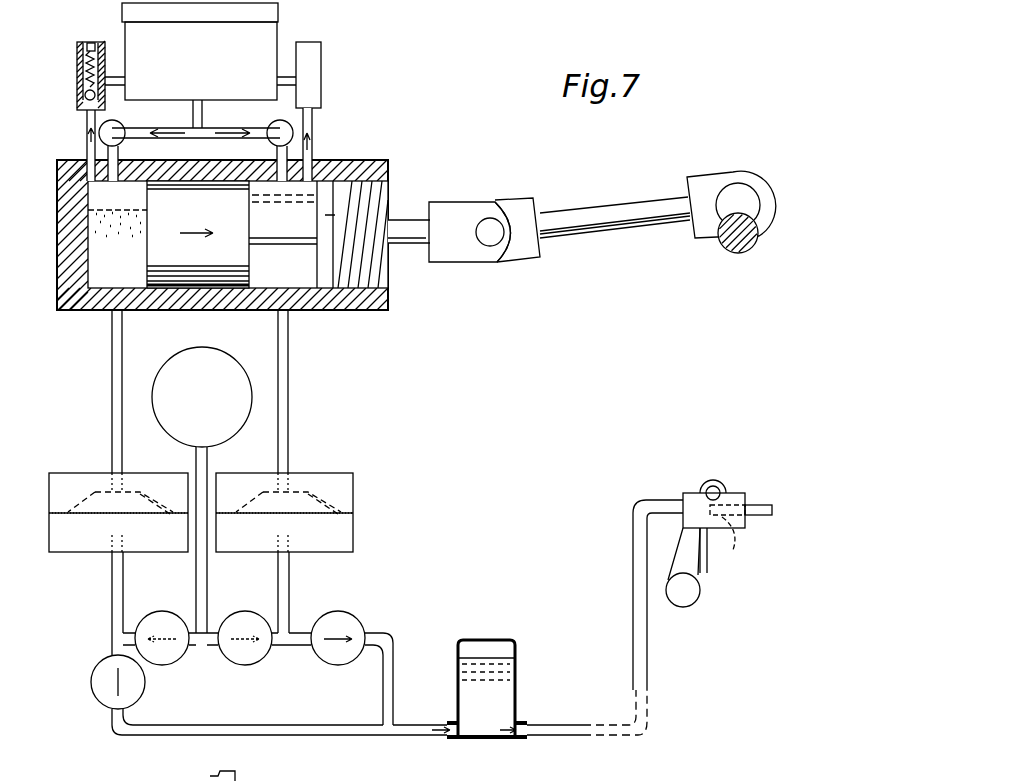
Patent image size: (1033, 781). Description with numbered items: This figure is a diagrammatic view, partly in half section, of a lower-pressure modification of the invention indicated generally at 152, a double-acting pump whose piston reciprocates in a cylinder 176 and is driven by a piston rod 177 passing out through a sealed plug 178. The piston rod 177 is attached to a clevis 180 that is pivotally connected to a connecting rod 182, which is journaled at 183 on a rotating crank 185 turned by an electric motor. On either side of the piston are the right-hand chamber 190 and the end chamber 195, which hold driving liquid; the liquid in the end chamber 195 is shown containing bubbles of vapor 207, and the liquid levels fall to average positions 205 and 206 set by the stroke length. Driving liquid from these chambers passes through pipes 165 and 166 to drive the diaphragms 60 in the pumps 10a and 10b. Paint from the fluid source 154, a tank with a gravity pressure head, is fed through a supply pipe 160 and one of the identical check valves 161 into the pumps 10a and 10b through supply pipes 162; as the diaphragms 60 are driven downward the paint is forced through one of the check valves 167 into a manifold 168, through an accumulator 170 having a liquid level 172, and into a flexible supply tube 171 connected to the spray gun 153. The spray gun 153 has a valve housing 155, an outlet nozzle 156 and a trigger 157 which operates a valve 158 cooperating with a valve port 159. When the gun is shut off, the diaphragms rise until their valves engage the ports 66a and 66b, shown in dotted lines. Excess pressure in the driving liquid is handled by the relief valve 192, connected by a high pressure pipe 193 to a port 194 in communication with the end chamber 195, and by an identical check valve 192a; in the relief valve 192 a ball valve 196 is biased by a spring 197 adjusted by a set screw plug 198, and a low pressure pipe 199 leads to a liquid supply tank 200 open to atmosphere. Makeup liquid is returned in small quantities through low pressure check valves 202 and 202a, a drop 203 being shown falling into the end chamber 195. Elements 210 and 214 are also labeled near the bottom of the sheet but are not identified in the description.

The diaphragm pump 10a is at (90, 565).
The diaphragm pump 10b is at (345, 558).
The diaphragm 60 is at (82, 470).
The port 66a is at (124, 480).
The port 66b is at (300, 478).
The pump 152 is at (380, 94).
The spray gun 153 is at (733, 458).
The fluid source tank 154 is at (200, 348).
The valve housing 155 is at (718, 490).
The outlet nozzle 156 is at (760, 515).
The trigger 157 is at (708, 572).
The valve 158 is at (751, 539).
The valve port 159 is at (745, 500).
The supply pipe 160 is at (207, 578).
The check valve 161 is at (228, 660).
The supply pipe 162 is at (118, 590).
The pipe 165 is at (112, 378).
The pipe 166 is at (288, 378).
The check valve 167 is at (338, 666).
The manifold 168 is at (365, 736).
The accumulator 170 is at (524, 668).
The flexible supply tube 171 is at (633, 531).
The liquid level 172 is at (484, 658).
The cylinder 176 is at (137, 300).
The piston rod 177 is at (412, 246).
The sealed plug 178 is at (375, 197).
The clevis 180 is at (456, 256).
The connecting rod 182 is at (593, 210).
The journal 183 is at (733, 175).
The rotating crank 185 is at (726, 252).
The right-hand chamber 190 is at (296, 268).
The relief valve 192 is at (60, 55).
The check valve 192a is at (336, 43).
The high pressure pipe 193 is at (87, 138).
The port 194 is at (88, 181).
The end chamber 195 is at (97, 245).
The ball valve 196 is at (88, 94).
The spring 197 is at (86, 70).
The set screw plug 198 is at (93, 42).
The low pressure pipe 199 is at (112, 80).
The liquid supply tank 200 is at (232, 52).
The low pressure check valve 202 is at (112, 127).
The low pressure check valve 202a is at (278, 121).
The drop 203 is at (120, 190).
The average liquid level 205 is at (120, 175).
The liquid level 206 is at (260, 188).
The vapor bubbles 207 is at (118, 215).
The element 210 is at (307, 772).
The element 214 is at (210, 778).